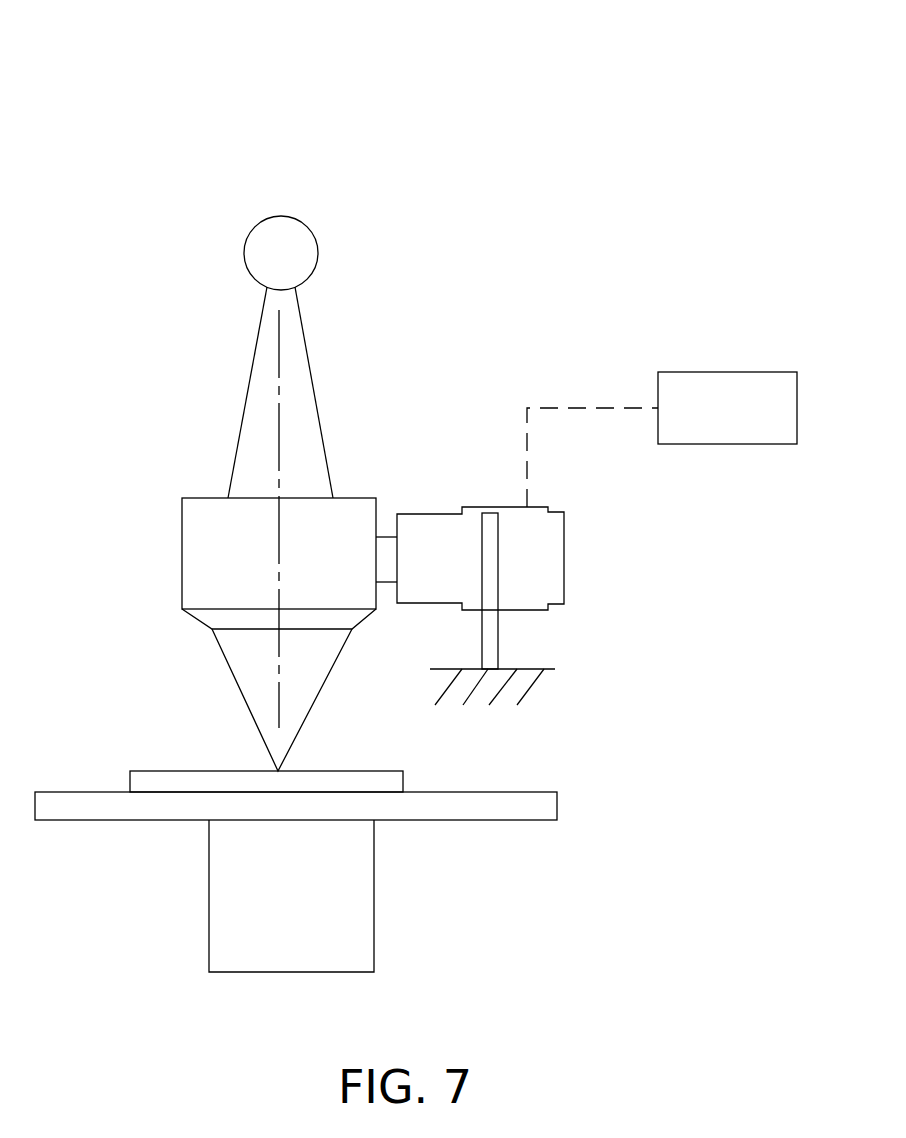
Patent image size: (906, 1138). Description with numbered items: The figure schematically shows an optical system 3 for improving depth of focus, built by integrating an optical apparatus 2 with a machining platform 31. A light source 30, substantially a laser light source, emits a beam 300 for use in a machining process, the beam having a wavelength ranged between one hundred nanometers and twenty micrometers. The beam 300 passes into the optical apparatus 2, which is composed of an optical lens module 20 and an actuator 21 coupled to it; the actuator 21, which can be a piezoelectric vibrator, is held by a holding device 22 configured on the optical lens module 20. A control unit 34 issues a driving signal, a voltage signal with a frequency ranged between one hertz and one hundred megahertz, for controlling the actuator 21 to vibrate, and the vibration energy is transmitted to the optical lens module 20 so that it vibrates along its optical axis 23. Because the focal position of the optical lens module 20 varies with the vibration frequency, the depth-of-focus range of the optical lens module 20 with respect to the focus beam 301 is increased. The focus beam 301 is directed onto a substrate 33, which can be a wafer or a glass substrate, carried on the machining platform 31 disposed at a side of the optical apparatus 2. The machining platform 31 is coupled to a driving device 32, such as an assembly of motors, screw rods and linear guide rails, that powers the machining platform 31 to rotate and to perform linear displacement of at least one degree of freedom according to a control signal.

The optical system 3 is at (99, 72).
The light source 30 is at (298, 225).
The beam 300 is at (315, 390).
The optical apparatus 2 is at (185, 464).
The optical lens module 20 is at (363, 510).
The optical axis 23 is at (280, 518).
The focus beam 301 is at (228, 669).
The actuator 21 is at (440, 520).
The holding device 22 is at (492, 629).
The control unit 34 is at (733, 372).
The substrate 33 is at (398, 778).
The machining platform 31 is at (547, 805).
The driving device 32 is at (367, 938).